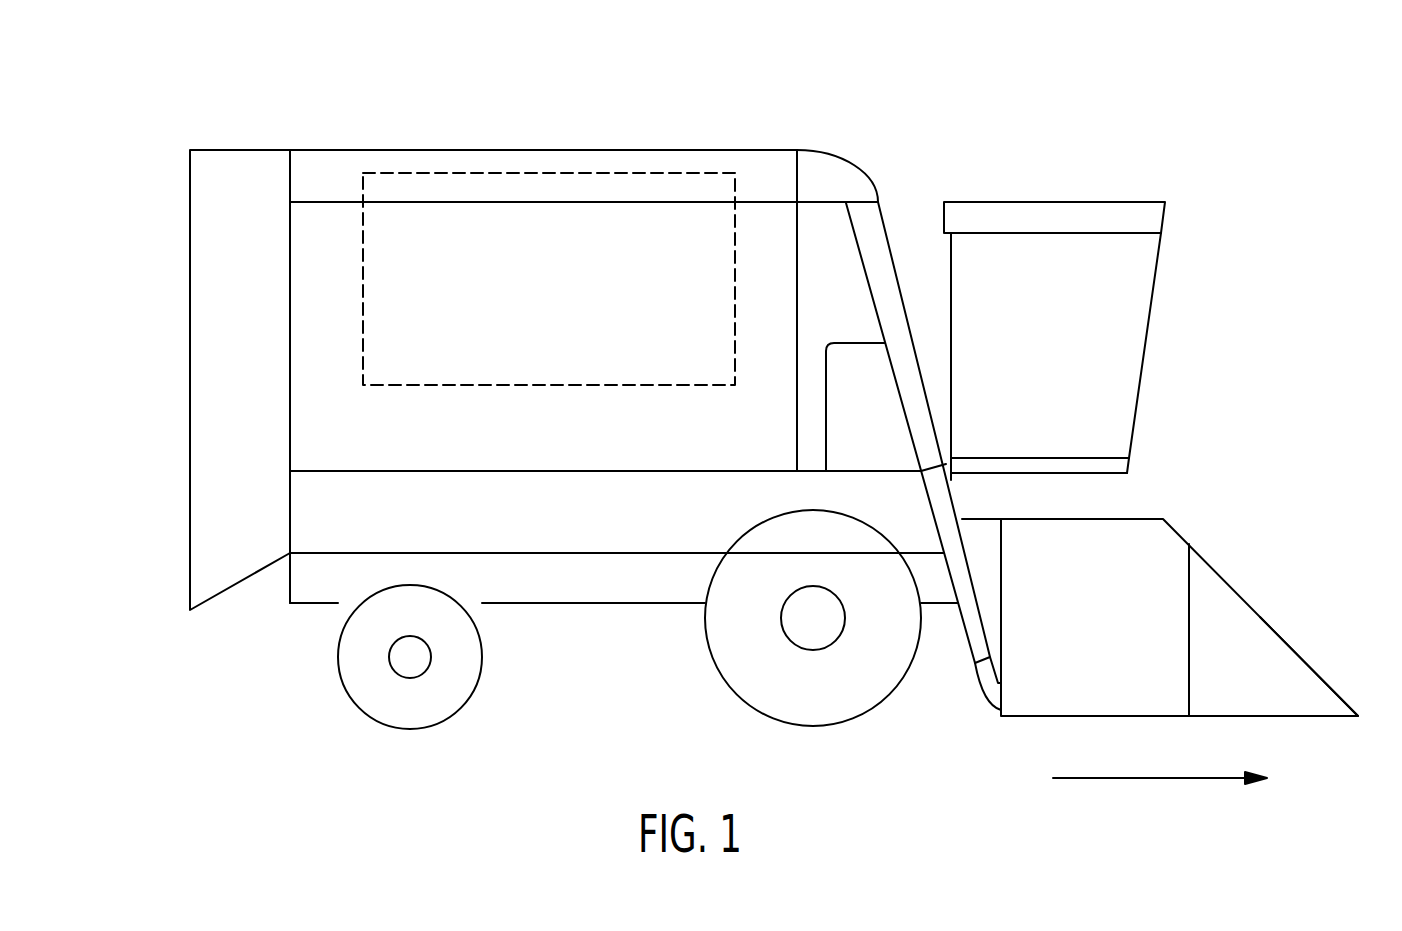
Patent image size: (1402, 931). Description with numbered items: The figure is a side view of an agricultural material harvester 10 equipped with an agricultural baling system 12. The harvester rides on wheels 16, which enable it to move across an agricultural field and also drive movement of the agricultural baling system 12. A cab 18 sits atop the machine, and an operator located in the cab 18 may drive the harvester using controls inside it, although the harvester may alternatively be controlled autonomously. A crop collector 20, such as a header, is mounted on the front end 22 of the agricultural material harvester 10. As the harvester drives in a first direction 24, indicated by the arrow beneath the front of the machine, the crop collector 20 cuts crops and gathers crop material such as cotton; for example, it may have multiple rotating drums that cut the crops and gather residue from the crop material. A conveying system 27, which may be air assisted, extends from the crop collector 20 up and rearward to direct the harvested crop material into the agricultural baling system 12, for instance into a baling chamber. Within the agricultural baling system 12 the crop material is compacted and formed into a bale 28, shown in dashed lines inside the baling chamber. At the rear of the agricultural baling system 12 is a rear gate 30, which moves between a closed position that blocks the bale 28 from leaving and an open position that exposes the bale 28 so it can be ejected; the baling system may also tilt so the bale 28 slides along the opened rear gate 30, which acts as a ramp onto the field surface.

The agricultural material harvester 10 is at (1060, 76).
The agricultural baling system 12 is at (865, 121).
The wheels 16 is at (407, 713).
The cab 18 is at (1055, 202).
The crop collector 20 is at (1283, 697).
The front end 22 is at (1245, 553).
The first direction 24 is at (1152, 778).
The conveying system 27 is at (883, 257).
The bale 28 is at (546, 173).
The rear gate 30 is at (208, 332).